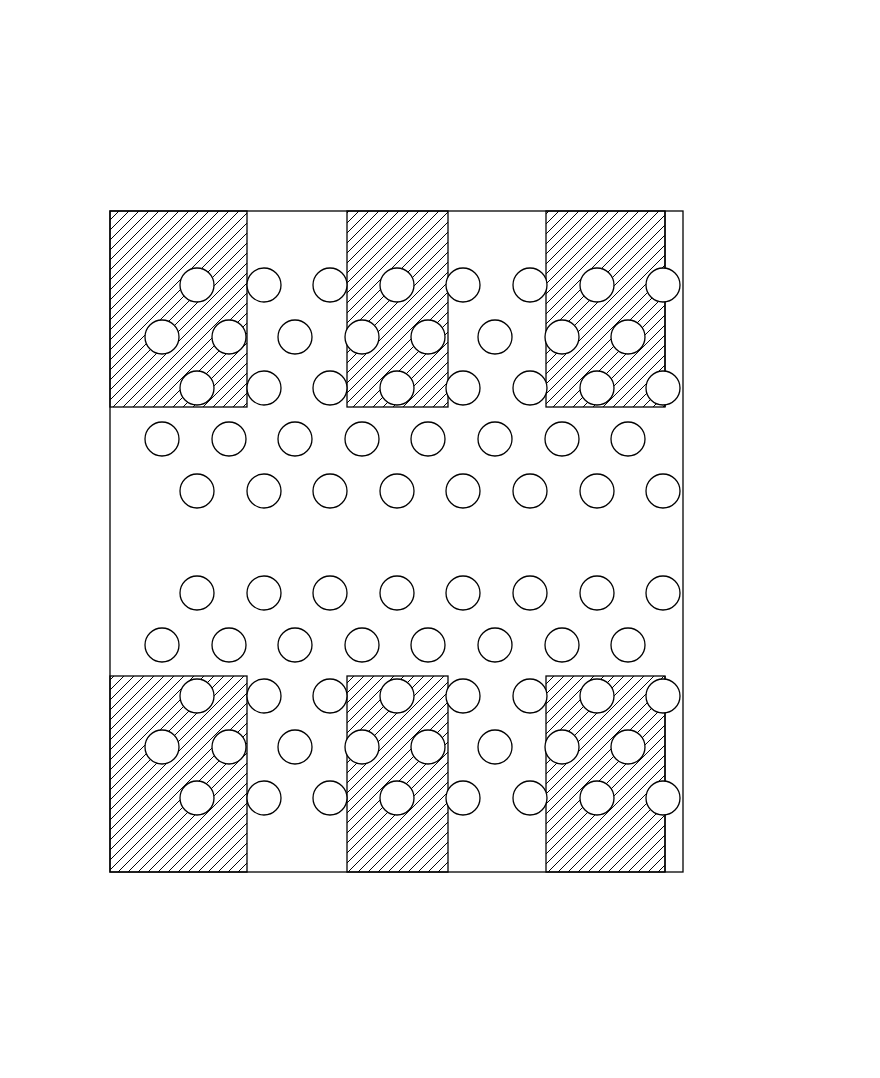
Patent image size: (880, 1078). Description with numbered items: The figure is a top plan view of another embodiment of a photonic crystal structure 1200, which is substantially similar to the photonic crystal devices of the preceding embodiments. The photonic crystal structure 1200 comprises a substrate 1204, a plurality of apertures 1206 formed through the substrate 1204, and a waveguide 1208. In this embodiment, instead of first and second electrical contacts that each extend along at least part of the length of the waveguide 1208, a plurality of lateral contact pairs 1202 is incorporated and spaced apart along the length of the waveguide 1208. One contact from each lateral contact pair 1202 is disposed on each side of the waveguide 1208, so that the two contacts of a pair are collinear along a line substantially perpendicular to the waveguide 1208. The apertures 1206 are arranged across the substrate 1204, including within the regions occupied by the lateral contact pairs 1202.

The photonic crystal structure 1200 is at (163, 88).
The lateral contact pairs 1202 is at (605, 932).
The substrate 1204 is at (672, 752).
The apertures 1206 is at (672, 390).
The waveguide 1208 is at (672, 545).